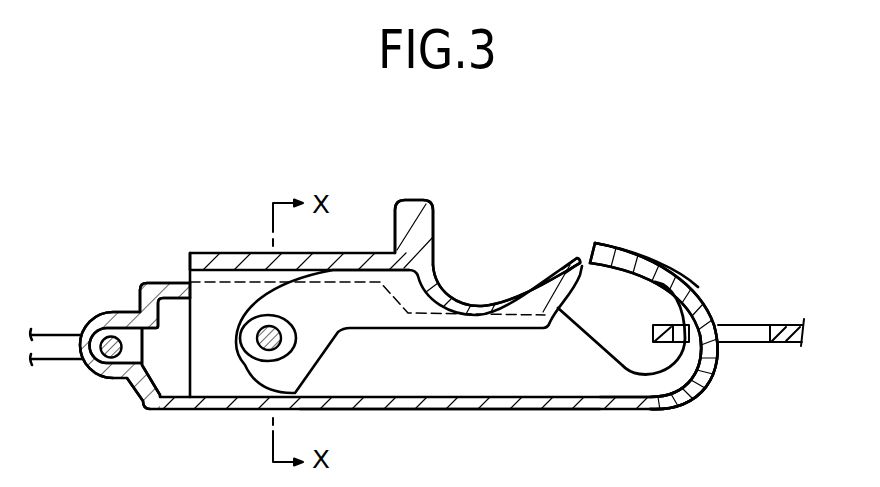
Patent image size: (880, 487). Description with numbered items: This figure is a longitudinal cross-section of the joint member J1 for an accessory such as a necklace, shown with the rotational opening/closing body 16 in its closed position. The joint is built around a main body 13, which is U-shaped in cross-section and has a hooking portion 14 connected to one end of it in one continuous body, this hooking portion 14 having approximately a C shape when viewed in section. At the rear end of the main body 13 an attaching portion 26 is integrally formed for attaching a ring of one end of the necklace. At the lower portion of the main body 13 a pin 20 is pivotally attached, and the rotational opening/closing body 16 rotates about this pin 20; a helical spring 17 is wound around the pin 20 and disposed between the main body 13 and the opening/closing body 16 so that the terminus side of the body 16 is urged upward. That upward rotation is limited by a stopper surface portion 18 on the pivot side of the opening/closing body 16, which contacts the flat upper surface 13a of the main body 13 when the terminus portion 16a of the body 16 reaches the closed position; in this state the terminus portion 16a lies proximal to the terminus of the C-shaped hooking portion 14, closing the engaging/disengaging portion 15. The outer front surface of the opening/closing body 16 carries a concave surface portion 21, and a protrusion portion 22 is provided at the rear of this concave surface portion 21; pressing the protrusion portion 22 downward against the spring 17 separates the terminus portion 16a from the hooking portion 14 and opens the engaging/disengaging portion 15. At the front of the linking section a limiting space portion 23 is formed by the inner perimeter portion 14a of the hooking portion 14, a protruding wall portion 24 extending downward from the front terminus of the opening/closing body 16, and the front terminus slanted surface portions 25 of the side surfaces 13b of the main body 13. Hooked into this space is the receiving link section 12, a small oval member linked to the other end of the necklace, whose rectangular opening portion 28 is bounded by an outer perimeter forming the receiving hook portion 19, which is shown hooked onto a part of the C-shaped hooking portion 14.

The joint member J1 is at (162, 255).
The receiving link section 12 is at (789, 352).
The main body 13 is at (459, 418).
The upper surface 13a is at (145, 397).
The side surface 13b is at (502, 372).
The hooking portion 14 is at (722, 281).
The inner perimeter portion 14a is at (706, 384).
The engaging/disengaging portion 15 is at (588, 246).
The rotational opening/closing body 16 is at (360, 246).
The terminus portion 16a is at (571, 254).
The helical spring 17 is at (266, 304).
The stopper surface portion 18 is at (222, 390).
The receiving hook portion 19 is at (660, 323).
The pin 20 is at (269, 346).
The concave surface portion 21 is at (495, 292).
The protrusion portion 22 is at (427, 200).
The limiting space portion 23 is at (654, 282).
The protruding wall portion 24 is at (584, 306).
The front terminus slanted surface portion 25 is at (636, 356).
The attaching portion 26 is at (90, 368).
The opening portion 28 is at (742, 333).